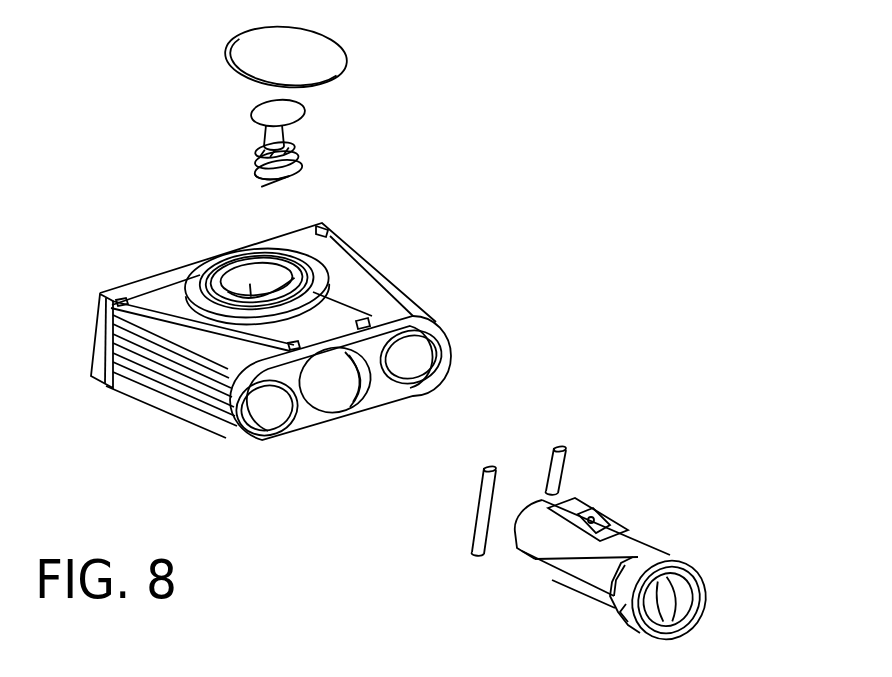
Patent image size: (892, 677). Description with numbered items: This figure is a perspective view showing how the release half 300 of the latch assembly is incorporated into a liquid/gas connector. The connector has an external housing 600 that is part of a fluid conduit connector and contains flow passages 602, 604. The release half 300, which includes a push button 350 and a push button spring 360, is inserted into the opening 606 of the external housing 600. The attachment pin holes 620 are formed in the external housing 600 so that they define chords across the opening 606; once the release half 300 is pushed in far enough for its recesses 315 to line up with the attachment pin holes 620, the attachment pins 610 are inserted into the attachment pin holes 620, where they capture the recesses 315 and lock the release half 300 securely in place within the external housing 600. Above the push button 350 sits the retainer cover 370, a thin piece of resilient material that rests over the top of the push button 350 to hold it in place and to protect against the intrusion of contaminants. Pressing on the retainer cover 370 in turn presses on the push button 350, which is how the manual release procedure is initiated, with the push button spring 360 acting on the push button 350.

The release half 300 is at (635, 567).
The recesses 315 is at (556, 582).
The push button 350 is at (282, 112).
The push button spring 360 is at (294, 147).
The retainer cover 370 is at (295, 72).
The external housing 600 is at (176, 324).
The flow passage 602 is at (275, 402).
The flow passage 604 is at (413, 364).
The opening 606 is at (337, 383).
The attachment pins 610 is at (550, 453).
The attachment pin holes 620 is at (293, 347).